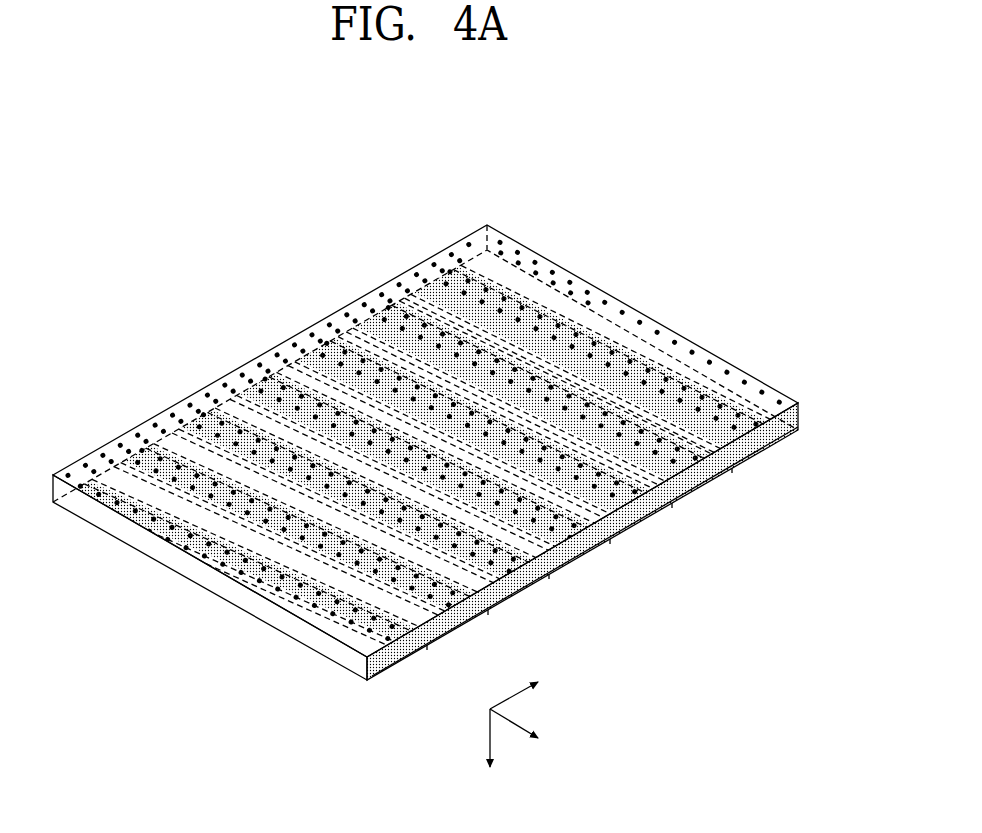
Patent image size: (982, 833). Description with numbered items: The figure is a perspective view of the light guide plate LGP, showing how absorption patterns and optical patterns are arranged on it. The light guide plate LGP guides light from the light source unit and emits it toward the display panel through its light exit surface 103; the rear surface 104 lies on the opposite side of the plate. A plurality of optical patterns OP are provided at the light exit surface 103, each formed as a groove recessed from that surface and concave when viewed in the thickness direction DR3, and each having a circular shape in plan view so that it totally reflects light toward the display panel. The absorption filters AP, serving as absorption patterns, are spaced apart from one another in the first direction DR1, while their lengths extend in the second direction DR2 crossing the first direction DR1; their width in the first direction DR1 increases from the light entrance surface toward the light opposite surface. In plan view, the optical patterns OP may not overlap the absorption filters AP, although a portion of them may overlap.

The light guide plate LGP is at (655, 233).
The light exit surface 103 is at (303, 372).
The rear surface 104 is at (212, 593).
The optical pattern OP is at (677, 343).
The absorption filter AP is at (642, 527).
The first direction DR1 is at (534, 689).
The second direction DR2 is at (534, 730).
The thickness direction DR3 is at (488, 751).